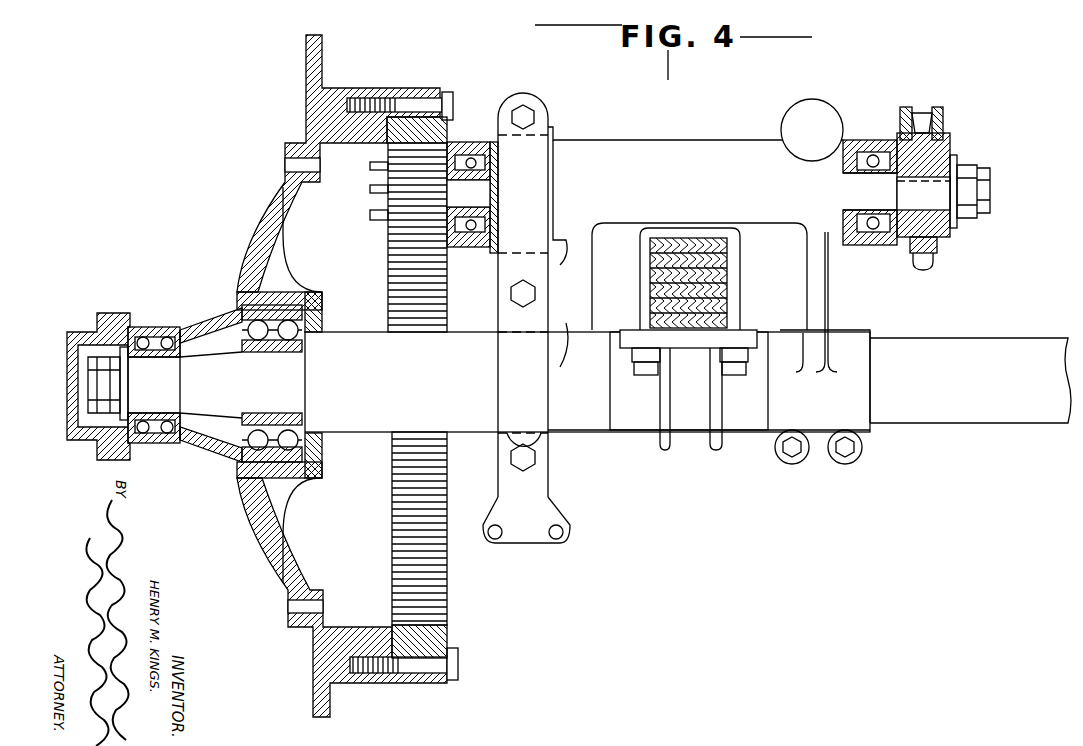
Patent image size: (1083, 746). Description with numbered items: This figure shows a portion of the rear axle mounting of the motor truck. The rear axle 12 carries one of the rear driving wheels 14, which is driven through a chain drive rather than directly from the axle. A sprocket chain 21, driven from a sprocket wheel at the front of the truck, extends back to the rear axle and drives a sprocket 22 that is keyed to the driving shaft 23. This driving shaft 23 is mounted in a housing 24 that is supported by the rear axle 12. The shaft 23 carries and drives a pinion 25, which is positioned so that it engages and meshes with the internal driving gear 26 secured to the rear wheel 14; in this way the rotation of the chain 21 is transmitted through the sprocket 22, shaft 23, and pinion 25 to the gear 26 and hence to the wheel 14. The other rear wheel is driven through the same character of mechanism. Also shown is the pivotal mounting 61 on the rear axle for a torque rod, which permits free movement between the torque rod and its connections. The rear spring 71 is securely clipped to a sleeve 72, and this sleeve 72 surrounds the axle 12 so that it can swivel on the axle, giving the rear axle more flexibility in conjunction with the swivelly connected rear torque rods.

The rear axle 12 is at (913, 414).
The rear driving wheel 14 is at (318, 60).
The sprocket chain 21 is at (943, 113).
The sprocket 22 is at (940, 152).
The driving shaft 23 is at (470, 193).
The housing 24 is at (594, 167).
The pinion 25 is at (420, 174).
The internal driving gear 26 is at (400, 103).
The pivotal mounting of torque rod 61 is at (542, 417).
The rear spring 71 is at (722, 288).
The sleeve 72 is at (745, 425).